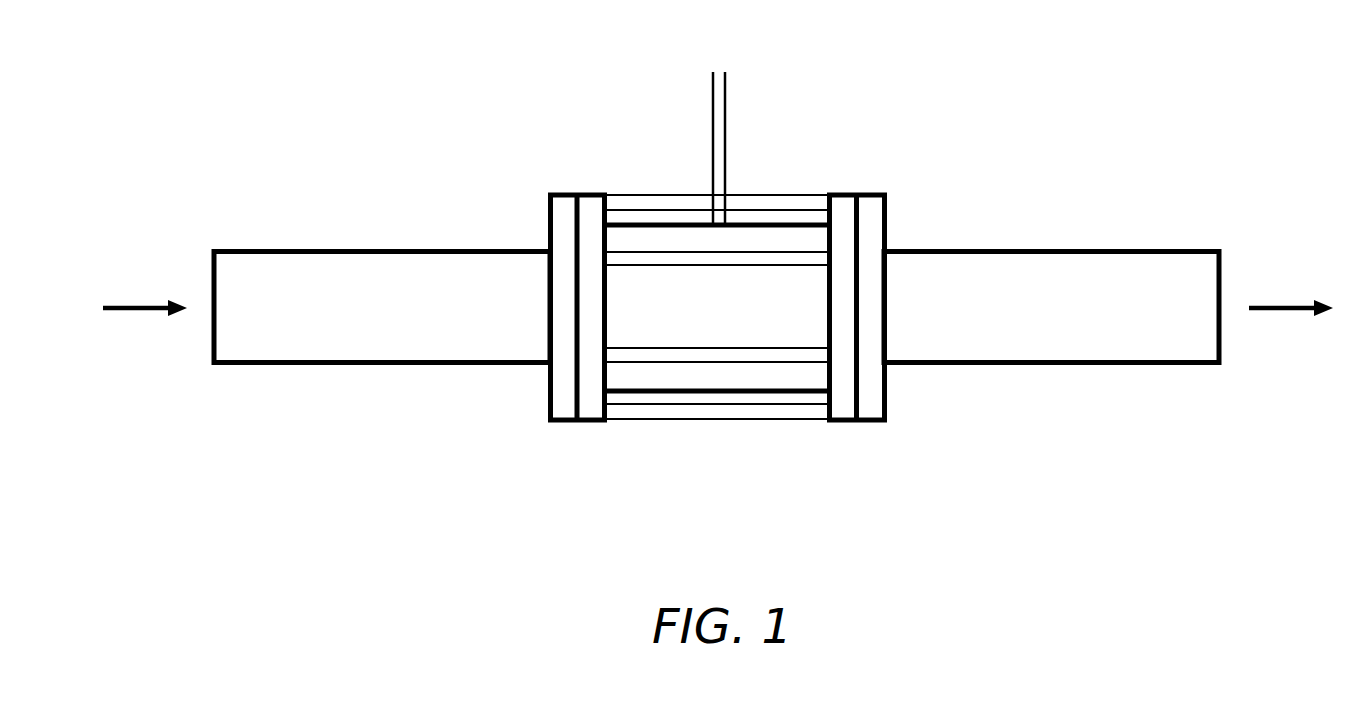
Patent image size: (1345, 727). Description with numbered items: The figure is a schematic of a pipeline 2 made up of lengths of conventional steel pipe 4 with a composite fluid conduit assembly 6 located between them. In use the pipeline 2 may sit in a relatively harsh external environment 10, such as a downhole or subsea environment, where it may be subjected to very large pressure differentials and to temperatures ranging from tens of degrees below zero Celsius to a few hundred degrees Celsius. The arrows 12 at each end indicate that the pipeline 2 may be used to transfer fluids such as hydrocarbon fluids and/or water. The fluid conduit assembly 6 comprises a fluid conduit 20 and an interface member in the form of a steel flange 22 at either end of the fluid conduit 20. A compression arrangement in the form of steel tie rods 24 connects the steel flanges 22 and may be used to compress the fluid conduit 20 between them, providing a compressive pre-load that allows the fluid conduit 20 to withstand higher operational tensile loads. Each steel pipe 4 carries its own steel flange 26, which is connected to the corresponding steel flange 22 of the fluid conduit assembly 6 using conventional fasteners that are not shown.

The pipeline 2 is at (488, 490).
The steel pipe 4 is at (401, 190).
The composite fluid conduit assembly 6 is at (763, 449).
The external environment 10 is at (734, 46).
The arrows 12 is at (143, 311).
The fluid conduit 20 is at (665, 393).
The steel flange 22 is at (593, 208).
The steel tie rods 24 is at (678, 257).
The steel flange 26 is at (565, 402).